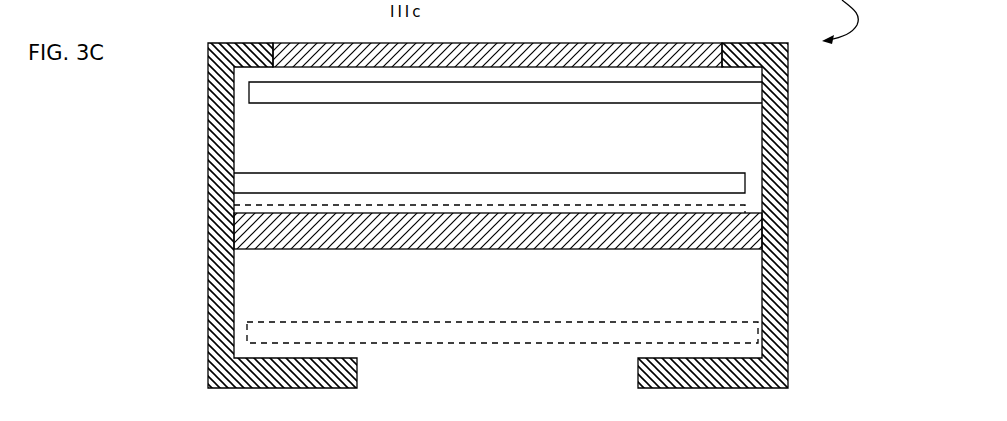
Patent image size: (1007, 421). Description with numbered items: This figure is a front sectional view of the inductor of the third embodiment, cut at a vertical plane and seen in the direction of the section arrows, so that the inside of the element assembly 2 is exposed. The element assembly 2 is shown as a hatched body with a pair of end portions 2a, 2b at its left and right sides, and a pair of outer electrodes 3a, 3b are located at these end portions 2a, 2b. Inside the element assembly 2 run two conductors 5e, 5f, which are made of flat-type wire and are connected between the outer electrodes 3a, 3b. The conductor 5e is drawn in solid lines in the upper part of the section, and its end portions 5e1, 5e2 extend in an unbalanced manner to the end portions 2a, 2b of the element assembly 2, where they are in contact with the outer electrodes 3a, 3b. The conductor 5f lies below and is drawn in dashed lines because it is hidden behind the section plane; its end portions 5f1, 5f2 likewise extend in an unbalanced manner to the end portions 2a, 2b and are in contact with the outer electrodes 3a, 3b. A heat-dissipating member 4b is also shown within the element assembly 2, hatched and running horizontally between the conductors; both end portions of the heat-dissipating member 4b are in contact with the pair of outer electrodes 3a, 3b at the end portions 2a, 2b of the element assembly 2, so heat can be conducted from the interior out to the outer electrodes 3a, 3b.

The element assembly 2 is at (248, 117).
The end portion of the element assembly 2a is at (220, 291).
The end portion of the element assembly 2b is at (785, 257).
The outer electrode 3a is at (208, 325).
The outer electrode 3b is at (788, 312).
The heat-dissipating member 4b is at (591, 43).
The conductor 5e is at (331, 88).
The end portion of the conductor 5e1 is at (757, 90).
The end portion of the conductor 5e2 is at (240, 182).
The conductor 5f is at (403, 345).
The end portion of the conductor 5f1 is at (788, 335).
The end portion of the conductor 5f2 is at (208, 203).